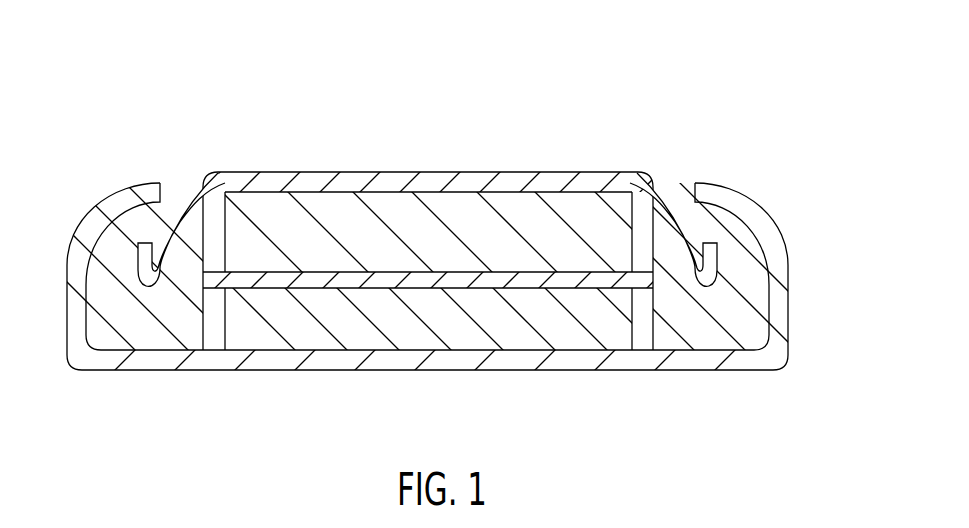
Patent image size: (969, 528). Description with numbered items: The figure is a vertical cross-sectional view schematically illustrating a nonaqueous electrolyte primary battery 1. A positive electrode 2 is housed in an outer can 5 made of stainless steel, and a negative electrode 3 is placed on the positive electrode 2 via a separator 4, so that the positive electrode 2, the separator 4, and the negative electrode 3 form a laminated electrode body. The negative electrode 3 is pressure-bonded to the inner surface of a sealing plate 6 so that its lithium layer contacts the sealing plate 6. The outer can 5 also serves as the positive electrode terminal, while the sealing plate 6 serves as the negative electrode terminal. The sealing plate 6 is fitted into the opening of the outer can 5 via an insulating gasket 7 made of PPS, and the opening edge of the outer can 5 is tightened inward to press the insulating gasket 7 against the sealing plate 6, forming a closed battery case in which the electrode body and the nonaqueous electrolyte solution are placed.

The nonaqueous electrolyte primary battery 1 is at (463, 147).
The positive electrode 2 is at (420, 330).
The negative electrode 3 is at (403, 220).
The separator 4 is at (307, 280).
The outer can 5 is at (548, 355).
The sealing plate 6 is at (553, 180).
The insulating gasket 7 is at (743, 280).